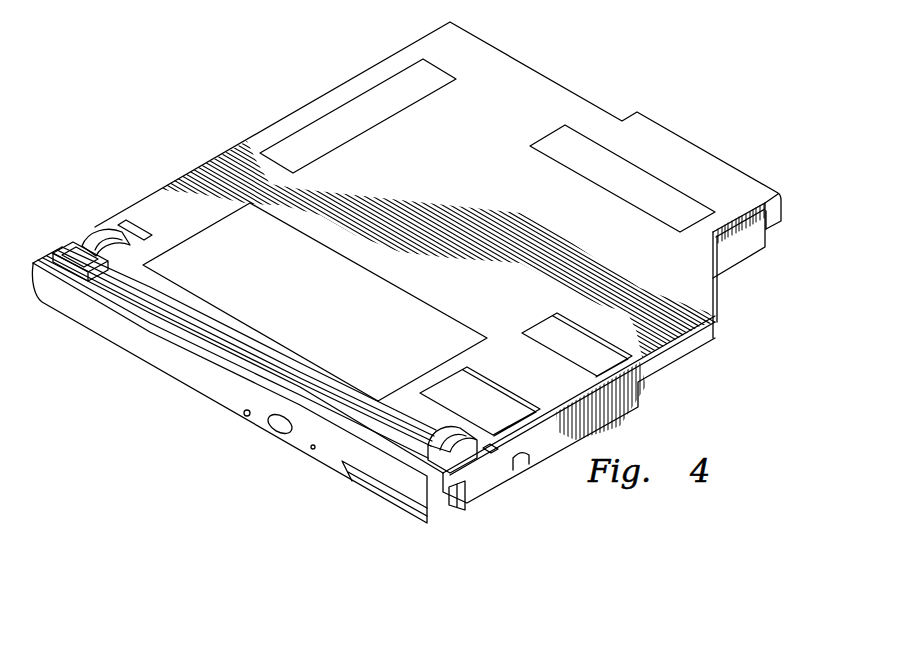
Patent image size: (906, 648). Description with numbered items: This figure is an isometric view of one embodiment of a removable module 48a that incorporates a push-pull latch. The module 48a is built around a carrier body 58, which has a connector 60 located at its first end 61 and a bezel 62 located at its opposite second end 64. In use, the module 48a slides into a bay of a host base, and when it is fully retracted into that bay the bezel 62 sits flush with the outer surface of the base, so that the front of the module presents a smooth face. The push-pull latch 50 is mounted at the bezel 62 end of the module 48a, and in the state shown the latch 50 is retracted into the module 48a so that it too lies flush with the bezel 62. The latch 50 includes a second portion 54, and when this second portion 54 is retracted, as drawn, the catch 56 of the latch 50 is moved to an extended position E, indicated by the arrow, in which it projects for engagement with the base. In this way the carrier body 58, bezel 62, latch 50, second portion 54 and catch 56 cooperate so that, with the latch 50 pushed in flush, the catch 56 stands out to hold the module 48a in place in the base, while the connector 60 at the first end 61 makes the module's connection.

The module 48a is at (508, 54).
The carrier body 58 is at (560, 97).
The connector 60 is at (780, 204).
The first end 61 is at (751, 259).
The bezel 62 is at (168, 366).
The second end 64 is at (68, 248).
The second portion 54 is at (351, 479).
The latch 50 is at (380, 512).
The catch 56 is at (458, 508).
The extended position E is at (419, 538).